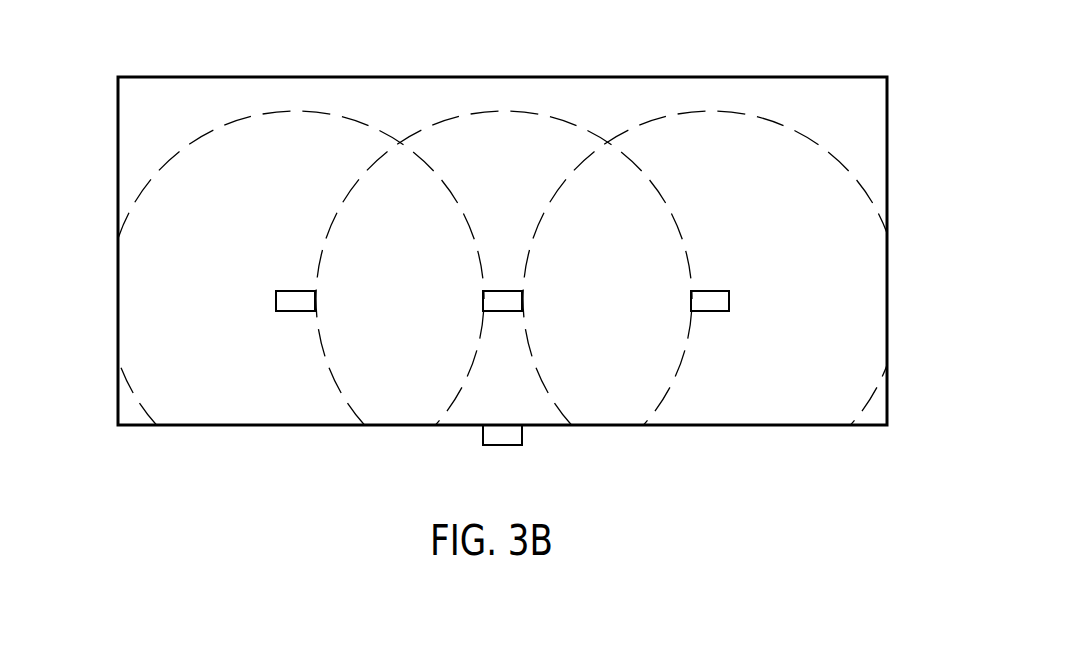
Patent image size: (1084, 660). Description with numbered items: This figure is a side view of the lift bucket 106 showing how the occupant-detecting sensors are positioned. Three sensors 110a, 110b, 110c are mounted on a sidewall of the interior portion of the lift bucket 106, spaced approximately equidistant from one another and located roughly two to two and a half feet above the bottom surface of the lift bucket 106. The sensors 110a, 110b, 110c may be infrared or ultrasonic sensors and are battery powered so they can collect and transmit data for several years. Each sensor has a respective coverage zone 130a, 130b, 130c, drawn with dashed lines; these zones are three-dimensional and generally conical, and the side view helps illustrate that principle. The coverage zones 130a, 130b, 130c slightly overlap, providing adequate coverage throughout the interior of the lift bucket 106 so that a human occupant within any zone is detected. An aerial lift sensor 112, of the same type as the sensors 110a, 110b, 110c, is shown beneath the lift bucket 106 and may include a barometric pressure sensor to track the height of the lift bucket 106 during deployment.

The lift bucket 106 is at (888, 103).
The coverage zone 130a is at (153, 175).
The coverage zone 130b is at (545, 117).
The coverage zone 130c is at (850, 175).
The sensor 110a is at (299, 311).
The sensor 110b is at (504, 311).
The sensor 110c is at (710, 311).
The aerial lift sensor 112 is at (502, 437).